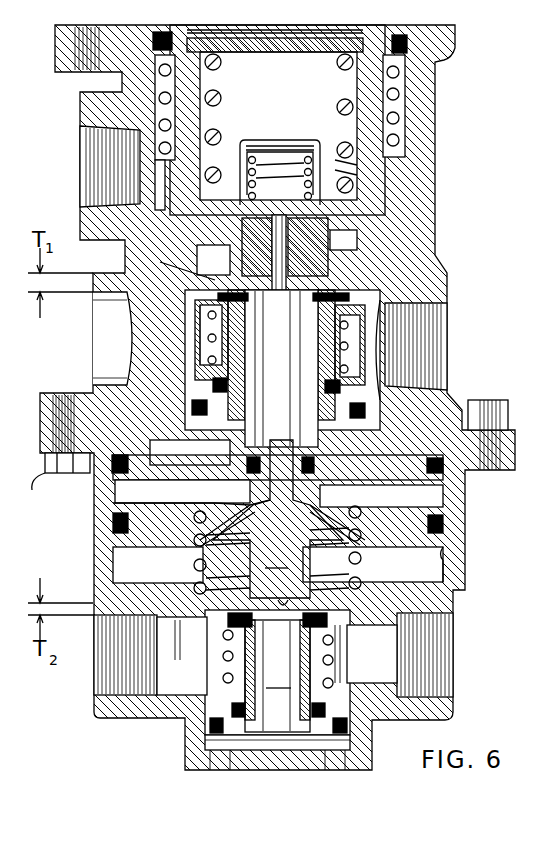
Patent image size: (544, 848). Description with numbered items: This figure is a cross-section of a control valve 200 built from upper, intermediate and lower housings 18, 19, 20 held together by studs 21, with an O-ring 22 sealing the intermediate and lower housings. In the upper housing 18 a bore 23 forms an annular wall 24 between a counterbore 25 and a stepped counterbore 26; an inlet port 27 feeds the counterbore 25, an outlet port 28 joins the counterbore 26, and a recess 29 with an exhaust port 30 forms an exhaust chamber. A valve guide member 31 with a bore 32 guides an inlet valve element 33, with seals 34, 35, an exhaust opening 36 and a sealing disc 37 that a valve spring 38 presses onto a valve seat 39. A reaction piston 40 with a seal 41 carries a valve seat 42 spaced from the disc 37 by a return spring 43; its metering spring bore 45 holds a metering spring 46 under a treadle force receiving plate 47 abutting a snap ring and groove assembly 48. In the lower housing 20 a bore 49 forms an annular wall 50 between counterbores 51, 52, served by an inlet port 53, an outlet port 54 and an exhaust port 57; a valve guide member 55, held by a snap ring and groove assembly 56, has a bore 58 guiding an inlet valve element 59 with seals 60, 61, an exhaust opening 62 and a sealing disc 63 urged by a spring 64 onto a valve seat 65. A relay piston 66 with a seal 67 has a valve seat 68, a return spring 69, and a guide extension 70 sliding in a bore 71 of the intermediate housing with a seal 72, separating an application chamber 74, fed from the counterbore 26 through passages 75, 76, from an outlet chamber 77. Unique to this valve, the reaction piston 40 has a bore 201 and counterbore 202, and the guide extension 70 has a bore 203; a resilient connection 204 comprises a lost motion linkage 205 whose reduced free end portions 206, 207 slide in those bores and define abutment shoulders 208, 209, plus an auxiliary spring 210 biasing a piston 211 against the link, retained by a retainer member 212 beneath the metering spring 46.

The upper housing 18 is at (425, 137).
The intermediate housing 19 is at (52, 438).
The lower housing 20 is at (450, 590).
The studs 21 is at (486, 414).
The O-ring 22 is at (120, 452).
The bore 23 is at (392, 246).
The annular wall 24 is at (178, 258).
The counterbore 25 is at (196, 304).
The stepped counterbore 26 is at (398, 107).
The inlet port 27 is at (448, 306).
The outlet port 28 is at (93, 134).
The recess 29 is at (160, 463).
The exhaust port 30 is at (105, 380).
The valve guide member 31 is at (200, 358).
The bore 32 is at (350, 356).
The inlet valve element 33 is at (205, 331).
The seal 34 is at (198, 407).
The seal 35 is at (212, 384).
The exhaust opening 36 is at (317, 390).
The sealing disc 37 is at (347, 297).
The valve spring 38 is at (352, 329).
The valve seat 39 is at (207, 279).
The reaction piston 40 is at (193, 183).
The seal 41 is at (152, 45).
The valve seat 42 is at (183, 249).
The return spring 43 is at (152, 103).
The metering spring bore 45 is at (375, 82).
The metering spring 46 is at (345, 165).
The treadle force receiving plate 47 is at (310, 46).
The snap ring and groove assembly 48 is at (262, 30).
The bore 49 is at (292, 566).
The annular wall 50 is at (407, 583).
The counterbore 51 is at (440, 565).
The counterbore 52 is at (215, 663).
The inlet port 53 is at (448, 618).
The outlet port 54 is at (110, 687).
The valve guide member 55 is at (232, 753).
The snap ring and groove assembly 56 is at (202, 747).
The exhaust port 57 is at (347, 760).
The bore 58 is at (328, 680).
The inlet valve element 59 is at (278, 675).
The seal 60 is at (348, 725).
The seal 61 is at (338, 711).
The exhaust opening 62 is at (302, 714).
The sealing disc 63 is at (277, 676).
The spring 64 is at (334, 648).
The valve seat 65 is at (258, 568).
The relay piston 66 is at (279, 555).
The seal 67 is at (450, 526).
The valve seat 68 is at (280, 591).
The return spring 69 is at (194, 567).
The guide extension 70 is at (328, 512).
The bore 71 is at (242, 495).
The seal 72 is at (248, 462).
The application chamber 74 is at (115, 494).
The passage 75 is at (405, 447).
The passage 76 is at (409, 412).
The outlet chamber 77 is at (115, 560).
The control valve 200 is at (449, 194).
The bore 201 is at (277, 250).
The counterbore 202 is at (372, 193).
The bore 203 is at (311, 480).
The resilient connection 204 is at (284, 129).
The lost motion linkage 205 is at (285, 362).
The reduced free end portion 206 is at (290, 246).
The reduced free end portion 207 is at (278, 519).
The abutment shoulder 208 is at (278, 272).
The abutment shoulder 209 is at (253, 452).
The auxiliary spring 210 is at (263, 146).
The piston 211 is at (280, 181).
The retainer member 212 is at (330, 146).